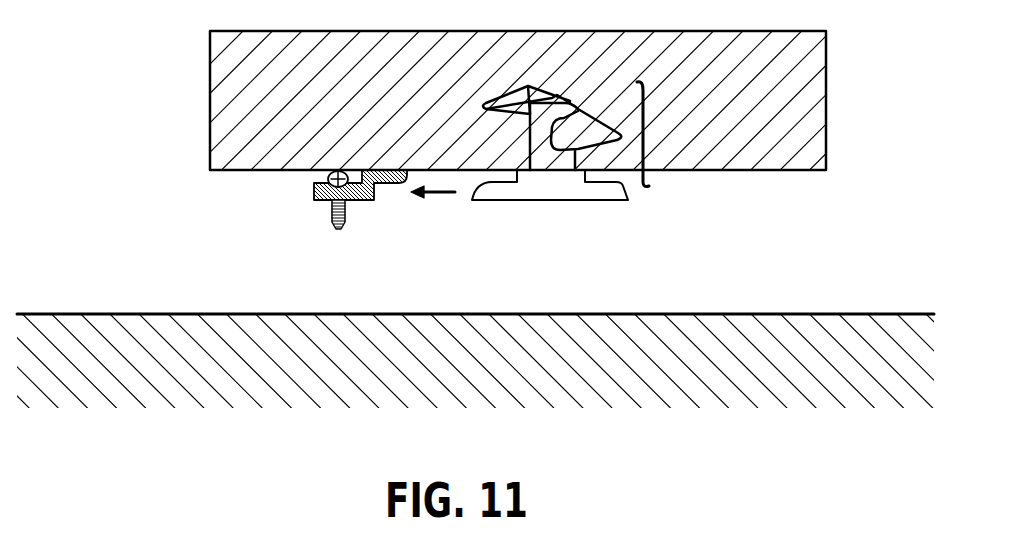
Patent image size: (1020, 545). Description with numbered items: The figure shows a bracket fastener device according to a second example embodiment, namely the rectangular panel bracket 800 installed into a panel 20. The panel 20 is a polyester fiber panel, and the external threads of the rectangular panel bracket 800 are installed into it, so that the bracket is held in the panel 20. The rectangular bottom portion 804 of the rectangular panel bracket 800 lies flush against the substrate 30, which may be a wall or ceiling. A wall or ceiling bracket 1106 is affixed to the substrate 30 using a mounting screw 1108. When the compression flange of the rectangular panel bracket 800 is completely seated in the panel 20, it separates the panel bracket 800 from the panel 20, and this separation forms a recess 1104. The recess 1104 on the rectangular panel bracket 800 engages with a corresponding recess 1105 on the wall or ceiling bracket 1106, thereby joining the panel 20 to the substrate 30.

The panel 20 is at (826, 109).
The substrate 30 is at (876, 314).
The rectangular panel bracket 800 is at (644, 136).
The rectangular bottom portion 804 is at (553, 200).
The recess 1104 is at (610, 171).
The corresponding recess 1105 is at (433, 194).
The wall or ceiling bracket 1106 is at (363, 200).
The mounting screw 1108 is at (333, 214).